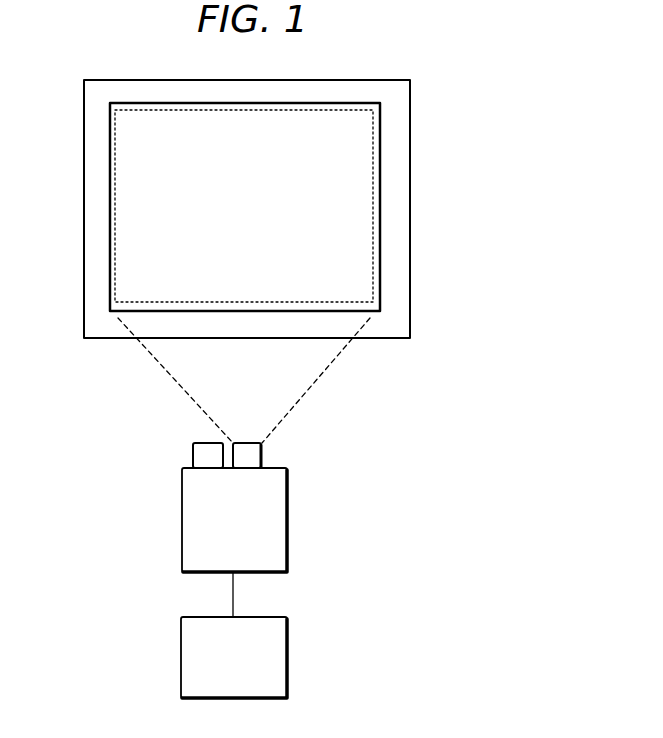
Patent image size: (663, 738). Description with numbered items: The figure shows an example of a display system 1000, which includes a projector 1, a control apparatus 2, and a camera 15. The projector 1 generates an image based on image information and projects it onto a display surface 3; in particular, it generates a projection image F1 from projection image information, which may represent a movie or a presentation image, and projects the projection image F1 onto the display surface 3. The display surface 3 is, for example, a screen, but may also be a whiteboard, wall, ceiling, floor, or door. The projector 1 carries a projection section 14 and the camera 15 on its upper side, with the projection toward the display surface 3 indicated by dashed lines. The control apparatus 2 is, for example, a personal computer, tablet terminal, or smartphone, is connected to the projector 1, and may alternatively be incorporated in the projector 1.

The projector 1 is at (289, 530).
The control apparatus 2 is at (289, 655).
The display surface 3 is at (393, 77).
The projection section 14 is at (262, 455).
The camera 15 is at (193, 456).
The projection image F1 is at (125, 230).
The display system 1000 is at (452, 377).